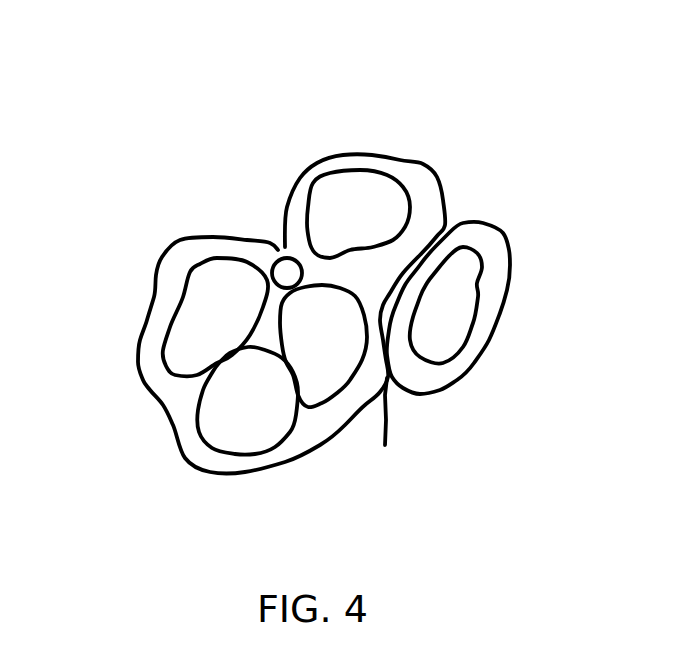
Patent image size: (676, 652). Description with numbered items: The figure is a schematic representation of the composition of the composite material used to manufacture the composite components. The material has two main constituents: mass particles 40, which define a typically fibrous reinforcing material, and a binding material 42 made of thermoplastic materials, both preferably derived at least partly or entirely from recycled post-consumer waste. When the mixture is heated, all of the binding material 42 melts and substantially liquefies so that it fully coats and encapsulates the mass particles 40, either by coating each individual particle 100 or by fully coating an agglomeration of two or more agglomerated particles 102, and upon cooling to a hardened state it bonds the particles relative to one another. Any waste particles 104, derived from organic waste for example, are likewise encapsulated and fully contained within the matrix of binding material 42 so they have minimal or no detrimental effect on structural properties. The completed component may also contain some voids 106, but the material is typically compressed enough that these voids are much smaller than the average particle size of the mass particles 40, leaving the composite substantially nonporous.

The mass particles 40 is at (347, 227).
The binding material 42 is at (435, 201).
The individual particle 100 is at (378, 188).
The agglomerated particles 102 is at (178, 358).
The waste particles 104 is at (287, 270).
The voids 106 is at (390, 431).